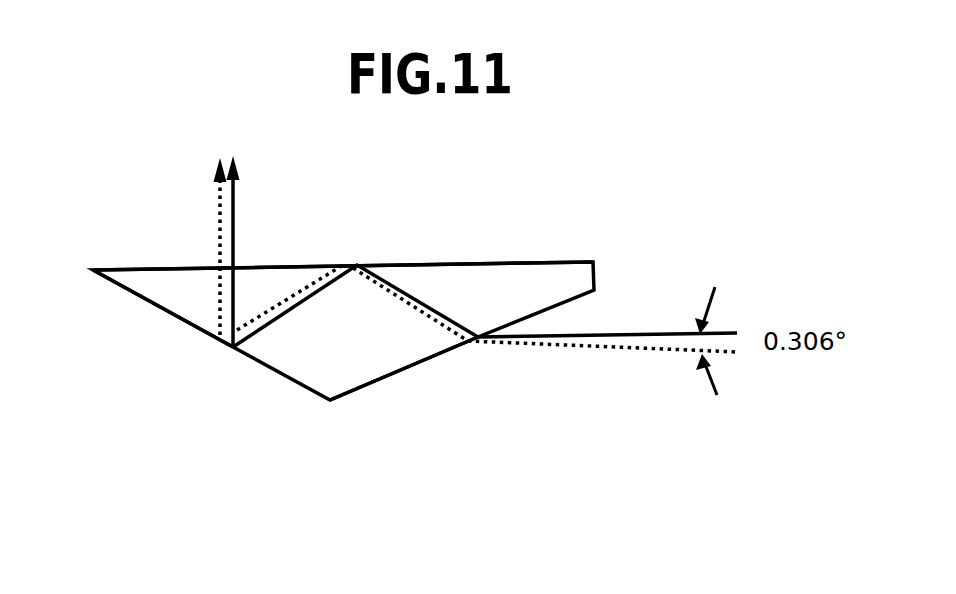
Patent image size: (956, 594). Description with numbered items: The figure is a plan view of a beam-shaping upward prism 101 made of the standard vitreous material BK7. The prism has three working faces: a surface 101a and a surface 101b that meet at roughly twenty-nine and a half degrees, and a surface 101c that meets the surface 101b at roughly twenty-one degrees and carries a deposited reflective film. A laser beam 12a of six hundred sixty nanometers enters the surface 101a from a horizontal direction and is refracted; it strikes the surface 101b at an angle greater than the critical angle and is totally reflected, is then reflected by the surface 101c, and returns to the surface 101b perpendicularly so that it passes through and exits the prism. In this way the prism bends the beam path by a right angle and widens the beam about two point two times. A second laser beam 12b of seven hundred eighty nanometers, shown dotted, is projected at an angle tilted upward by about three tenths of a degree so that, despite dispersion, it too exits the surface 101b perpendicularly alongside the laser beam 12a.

The beam-shaping upward prism 101 is at (295, 352).
The surface 101a is at (410, 368).
The surface 101b is at (423, 262).
The surface 101c is at (193, 325).
The laser beam 12a is at (620, 333).
The laser beam 12b is at (618, 350).